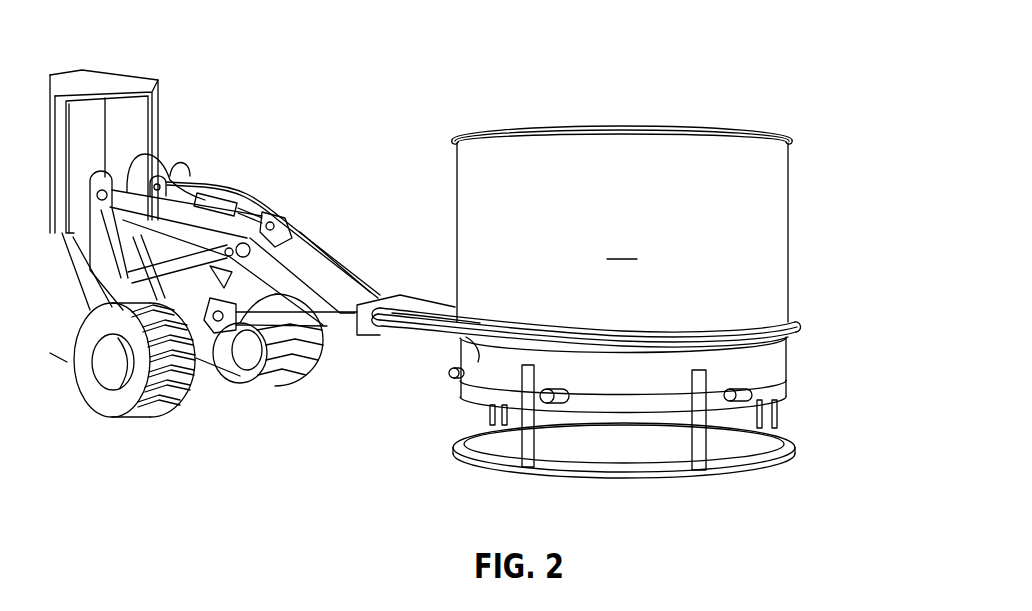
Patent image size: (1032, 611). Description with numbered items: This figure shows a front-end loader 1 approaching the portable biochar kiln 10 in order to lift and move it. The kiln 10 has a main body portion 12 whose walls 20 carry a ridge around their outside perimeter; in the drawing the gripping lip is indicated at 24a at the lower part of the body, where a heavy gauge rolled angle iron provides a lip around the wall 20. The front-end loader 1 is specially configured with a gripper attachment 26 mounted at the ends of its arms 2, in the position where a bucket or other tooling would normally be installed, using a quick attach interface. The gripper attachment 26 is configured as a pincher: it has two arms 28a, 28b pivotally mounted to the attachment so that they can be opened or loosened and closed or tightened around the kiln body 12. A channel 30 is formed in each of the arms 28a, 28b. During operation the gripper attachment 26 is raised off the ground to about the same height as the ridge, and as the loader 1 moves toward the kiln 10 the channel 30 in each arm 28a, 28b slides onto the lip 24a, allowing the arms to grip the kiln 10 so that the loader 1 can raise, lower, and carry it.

The front-end loader 1 is at (215, 243).
The arms 2 is at (340, 248).
The biochar kiln 10 is at (667, 270).
The main body portion 12 is at (790, 237).
The walls 20 is at (622, 249).
The flange of tank 24a is at (795, 321).
The gripper attachment 26 is at (395, 285).
The arm 28a is at (422, 344).
The arm 28b is at (446, 305).
The channel 30 is at (478, 362).